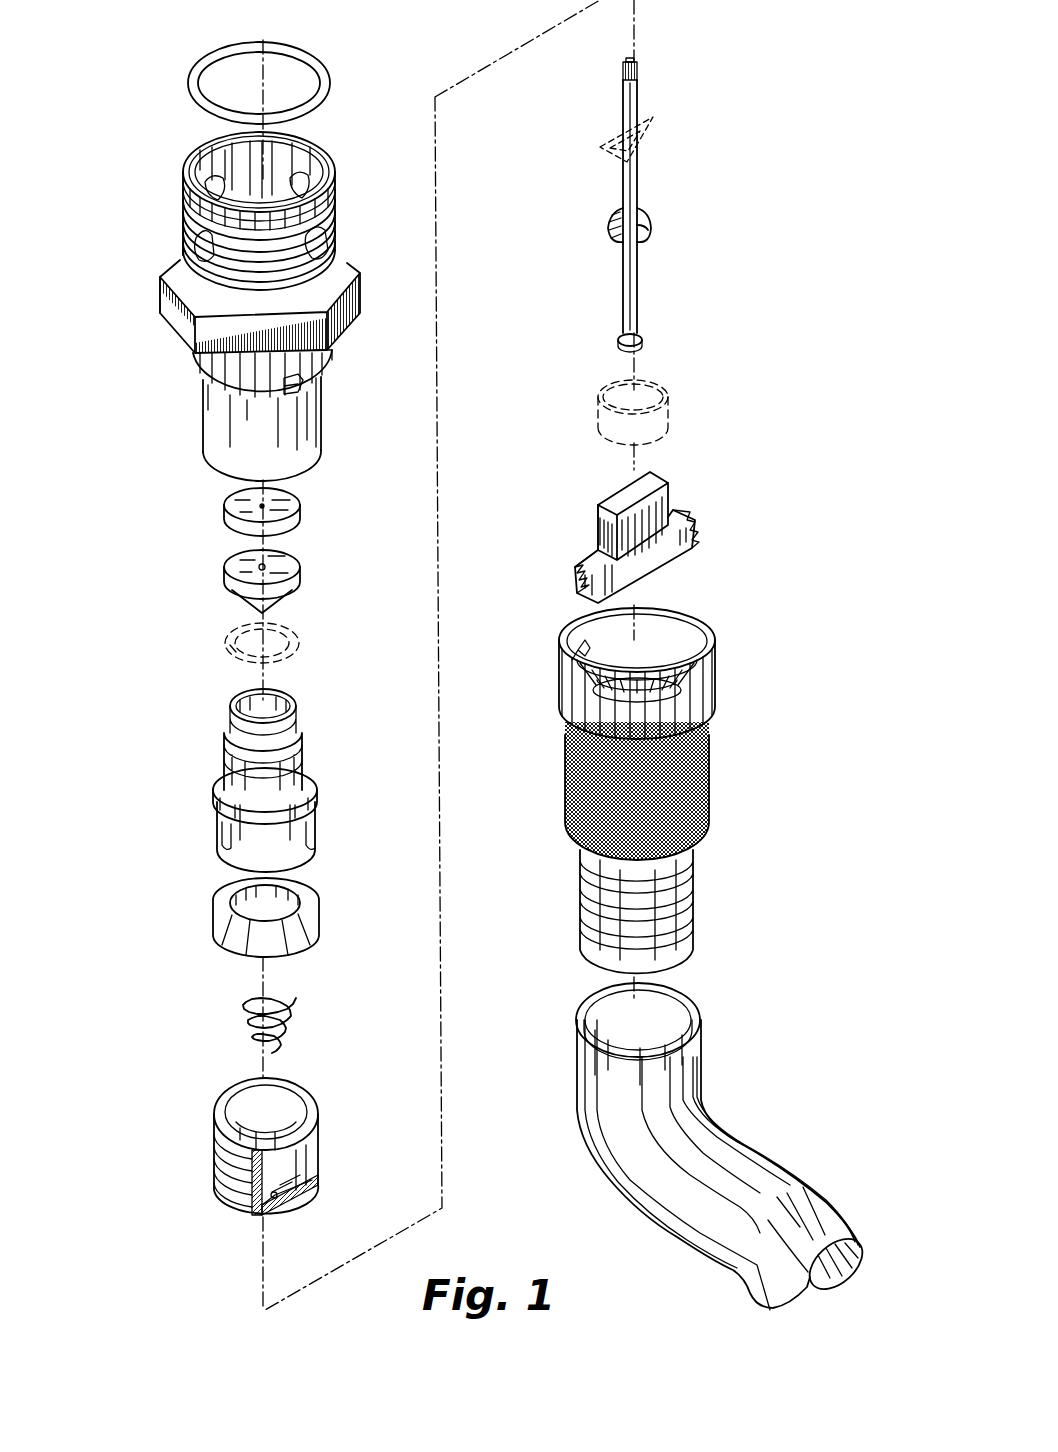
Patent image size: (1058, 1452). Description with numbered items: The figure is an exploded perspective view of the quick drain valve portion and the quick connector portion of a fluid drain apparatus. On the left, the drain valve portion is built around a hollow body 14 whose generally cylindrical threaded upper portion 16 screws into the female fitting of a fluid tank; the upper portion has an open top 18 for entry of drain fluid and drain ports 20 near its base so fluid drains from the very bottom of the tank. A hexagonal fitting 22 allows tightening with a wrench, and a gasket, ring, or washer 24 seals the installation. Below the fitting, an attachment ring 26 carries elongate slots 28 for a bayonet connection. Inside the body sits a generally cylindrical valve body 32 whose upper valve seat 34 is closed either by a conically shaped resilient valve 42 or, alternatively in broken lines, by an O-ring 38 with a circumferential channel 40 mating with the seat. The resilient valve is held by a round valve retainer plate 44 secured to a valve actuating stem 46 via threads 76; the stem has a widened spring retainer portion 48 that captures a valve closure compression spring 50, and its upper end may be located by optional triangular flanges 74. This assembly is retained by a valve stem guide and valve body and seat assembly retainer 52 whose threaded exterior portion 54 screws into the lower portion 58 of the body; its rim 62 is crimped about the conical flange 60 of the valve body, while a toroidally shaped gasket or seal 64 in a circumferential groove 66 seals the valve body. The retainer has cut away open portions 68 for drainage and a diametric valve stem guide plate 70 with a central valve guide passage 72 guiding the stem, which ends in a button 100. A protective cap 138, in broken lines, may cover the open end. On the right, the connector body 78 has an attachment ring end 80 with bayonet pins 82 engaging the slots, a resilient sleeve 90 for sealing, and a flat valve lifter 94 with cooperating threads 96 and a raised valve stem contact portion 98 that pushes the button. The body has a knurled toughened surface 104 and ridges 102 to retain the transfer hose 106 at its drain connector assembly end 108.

The hollow body 14 is at (152, 363).
The threaded upper portion 16 is at (188, 220).
The open top 18 is at (240, 158).
The drain ports 20 is at (327, 253).
The hexagonal fitting 22 is at (160, 290).
The gasket, ring, or washer 24 is at (188, 82).
The attachment ring 26 is at (332, 356).
The elongate slots 28 is at (302, 386).
The valve body 32 is at (304, 730).
The upper valve seat 34 is at (297, 702).
The O-ring 38 is at (300, 640).
The circumferential channel 40 is at (230, 650).
The conically shaped resilient valve 42 is at (226, 570).
The valve retainer plate 44 is at (225, 508).
The valve actuating stem 46 is at (640, 190).
The spring retainer portion 48 is at (650, 222).
The valve closure compression spring 50 is at (243, 1018).
The valve stem guide and valve body and seat assembly retainer 52 is at (218, 1115).
The threaded exterior portion 54 is at (215, 1160).
The lower portion 58 is at (203, 430).
The conical flange 60 is at (217, 830).
The rim 62 is at (282, 1118).
The toroidally shaped gasket or seal 64 is at (318, 915).
The circumferential groove 66 is at (235, 790).
The cut away open portion 68 is at (305, 1150).
The valve stem guide plate 70 is at (300, 1190).
The valve guide passage 72 is at (278, 1197).
The triangular flanges 74 is at (658, 123).
The threads 76 is at (640, 72).
The connector body 78 is at (752, 799).
The attachment ring end 80 is at (713, 642).
The bayonet pins 82 is at (590, 630).
The sleeve 90 is at (700, 690).
The valve lifter 94 is at (680, 560).
The cooperating threads 96 is at (575, 585).
The valve stem contact portion 98 is at (607, 500).
The button 100 is at (618, 341).
The ridges 102 is at (700, 920).
The toughened texture or surface 104 is at (565, 770).
The transfer hose 106 is at (830, 1185).
The drain connector assembly end 108 is at (705, 1030).
The protective cap 138 is at (672, 410).